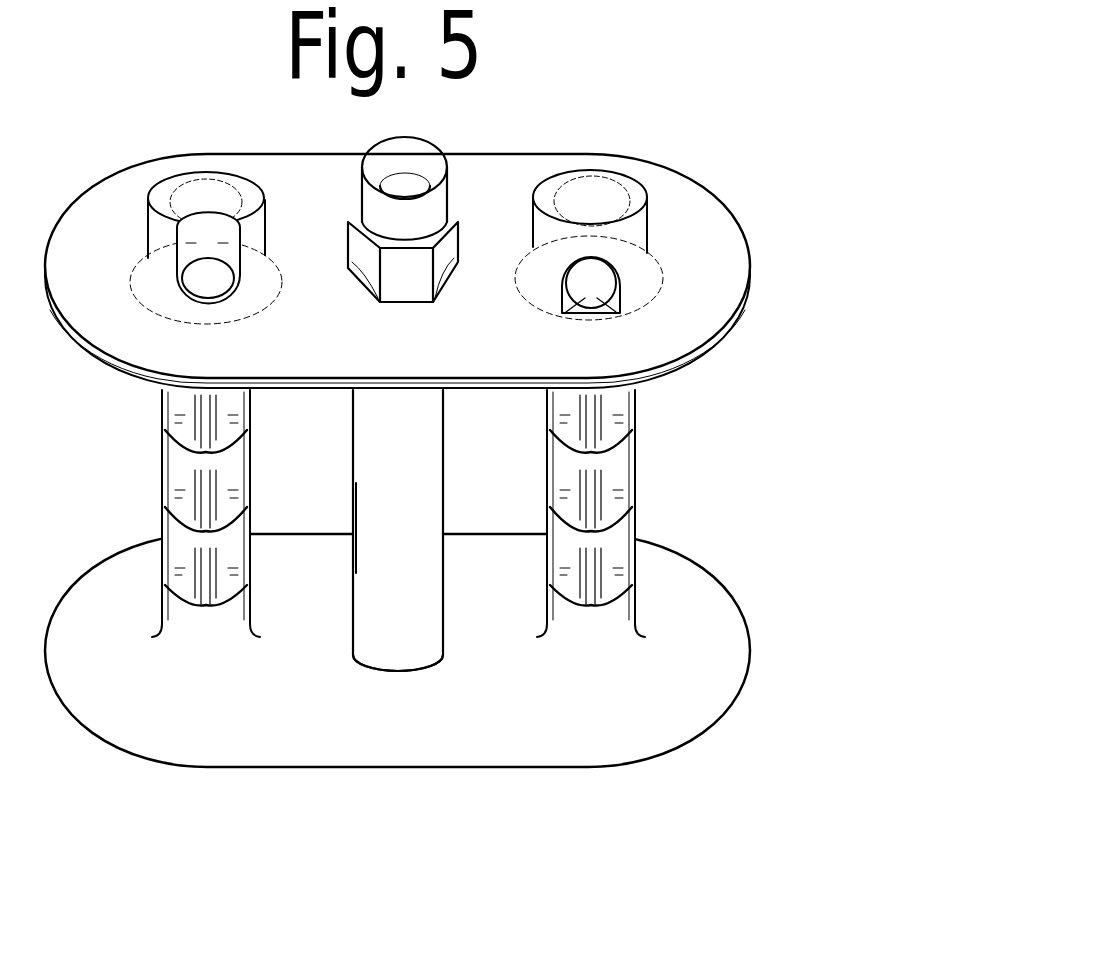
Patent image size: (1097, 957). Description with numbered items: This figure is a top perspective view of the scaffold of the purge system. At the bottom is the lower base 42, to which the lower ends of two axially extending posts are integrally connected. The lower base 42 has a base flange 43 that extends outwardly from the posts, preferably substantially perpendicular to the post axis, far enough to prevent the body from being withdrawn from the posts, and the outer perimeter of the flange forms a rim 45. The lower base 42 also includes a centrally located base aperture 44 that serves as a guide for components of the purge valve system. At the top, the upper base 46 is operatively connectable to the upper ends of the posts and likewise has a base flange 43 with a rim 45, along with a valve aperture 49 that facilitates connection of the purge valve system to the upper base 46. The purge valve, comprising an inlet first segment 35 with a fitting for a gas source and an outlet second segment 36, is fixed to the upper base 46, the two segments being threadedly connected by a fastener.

The first segment 35 is at (449, 183).
The second segment 36 is at (445, 485).
The lower base 42 is at (430, 770).
The base flange 43 is at (506, 476).
The base aperture 44 is at (402, 676).
The rim 45 is at (752, 253).
The upper base 46 is at (701, 178).
The valve aperture 49 is at (434, 300).